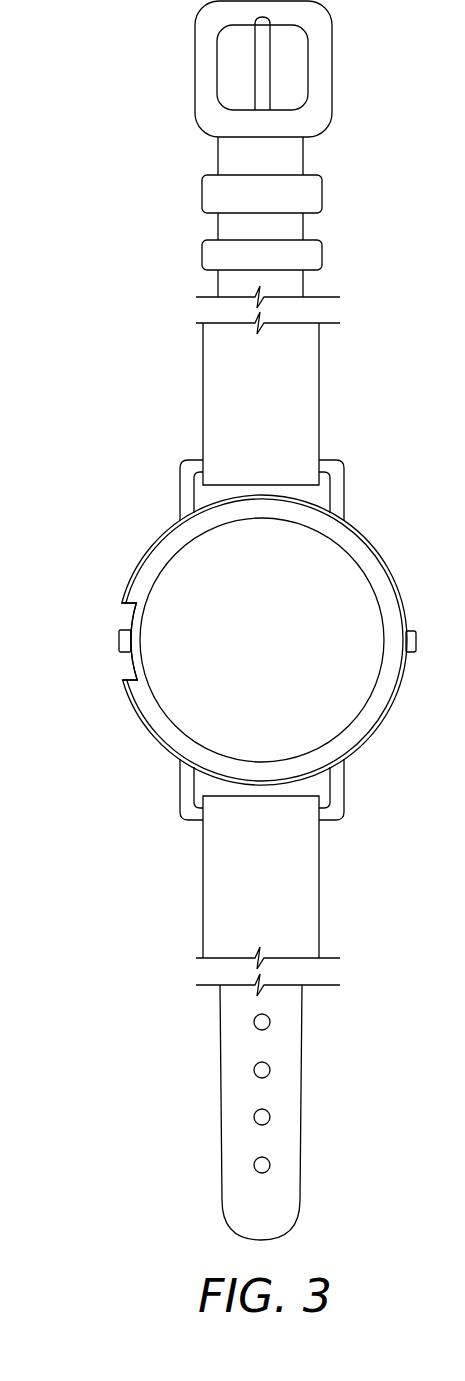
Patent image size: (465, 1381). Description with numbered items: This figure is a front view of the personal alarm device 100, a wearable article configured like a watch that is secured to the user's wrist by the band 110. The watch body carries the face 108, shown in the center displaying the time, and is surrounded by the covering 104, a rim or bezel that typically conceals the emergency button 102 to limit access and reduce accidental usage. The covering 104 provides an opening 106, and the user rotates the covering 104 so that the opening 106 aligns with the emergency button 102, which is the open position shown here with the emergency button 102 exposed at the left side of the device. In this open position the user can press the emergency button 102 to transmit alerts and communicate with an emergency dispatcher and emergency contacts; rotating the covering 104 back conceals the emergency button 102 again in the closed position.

The personal alarm device 100 is at (245, 620).
The emergency button 102 is at (119, 641).
The covering 104 is at (163, 733).
The opening 106 is at (132, 660).
The face 108 is at (337, 582).
The band 110 is at (297, 370).